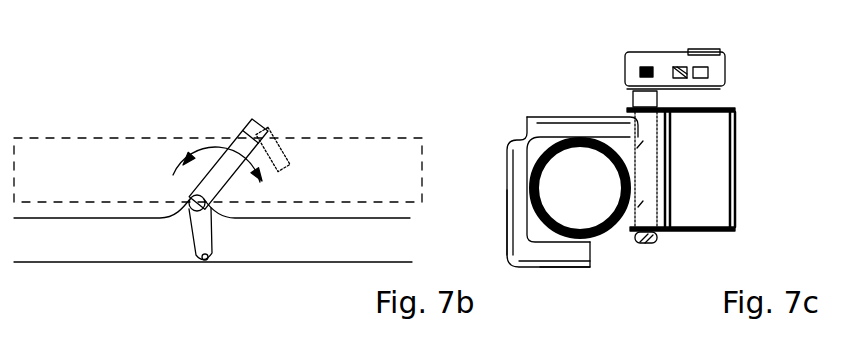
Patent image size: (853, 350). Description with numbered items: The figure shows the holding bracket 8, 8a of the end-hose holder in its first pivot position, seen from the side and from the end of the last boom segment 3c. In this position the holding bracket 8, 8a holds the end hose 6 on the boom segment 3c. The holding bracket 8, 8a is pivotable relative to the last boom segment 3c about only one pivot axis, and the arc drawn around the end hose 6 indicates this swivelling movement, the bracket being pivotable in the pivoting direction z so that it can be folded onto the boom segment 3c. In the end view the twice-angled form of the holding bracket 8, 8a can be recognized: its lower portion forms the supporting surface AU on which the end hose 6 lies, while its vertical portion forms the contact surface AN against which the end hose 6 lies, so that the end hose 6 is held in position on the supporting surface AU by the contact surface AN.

In FIG. 7B, the end hose 6 is at (167, 157).
In FIG. 7C, the end hose 6 is at (582, 137).
In FIG. 7B, the holding bracket 8 is at (245, 135).
In FIG. 7C, the holding bracket 8 is at (540, 190).
In FIG. 7B, the holding bracket 8a is at (257, 120).
In FIG. 7C, the holding bracket 8a is at (540, 190).
In FIG. 7B, the last boom segment 3c is at (298, 247).
In FIG. 7C, the last boom segment 3c is at (683, 208).
In FIG. 7B, the pivoting direction z is at (193, 192).
In FIG. 7C, the contact surface AN is at (523, 198).
In FIG. 7C, the supporting surface AU is at (582, 242).